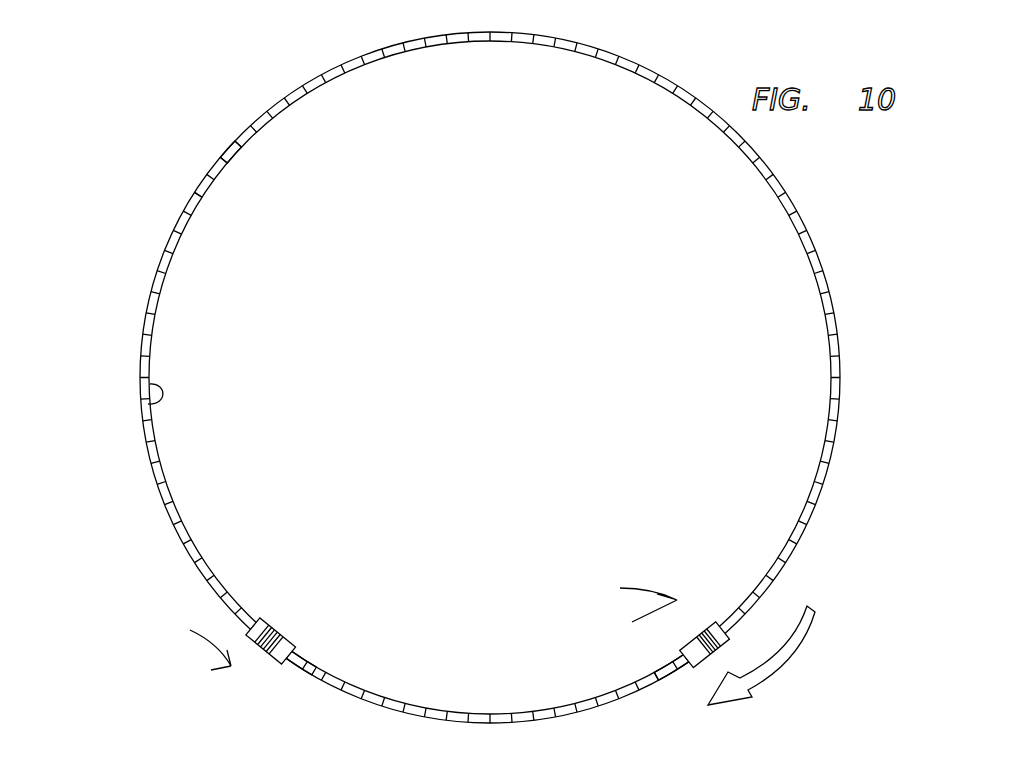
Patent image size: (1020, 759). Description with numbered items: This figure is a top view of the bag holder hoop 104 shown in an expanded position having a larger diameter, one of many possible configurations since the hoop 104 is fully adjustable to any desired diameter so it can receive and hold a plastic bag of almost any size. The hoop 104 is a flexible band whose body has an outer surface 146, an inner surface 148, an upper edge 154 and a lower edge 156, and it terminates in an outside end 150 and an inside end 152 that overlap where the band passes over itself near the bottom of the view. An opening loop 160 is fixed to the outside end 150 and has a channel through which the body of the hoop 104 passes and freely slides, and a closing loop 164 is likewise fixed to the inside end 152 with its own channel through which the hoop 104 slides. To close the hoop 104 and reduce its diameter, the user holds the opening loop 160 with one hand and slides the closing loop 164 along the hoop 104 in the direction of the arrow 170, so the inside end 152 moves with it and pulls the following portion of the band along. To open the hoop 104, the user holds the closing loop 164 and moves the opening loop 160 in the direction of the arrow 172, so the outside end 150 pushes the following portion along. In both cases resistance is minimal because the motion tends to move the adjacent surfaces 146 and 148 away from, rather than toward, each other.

The hoop 104 is at (446, 377).
The outer surface 146 is at (141, 345).
The inner surface 148 is at (151, 398).
The outside end 150 is at (290, 665).
The inside end 152 is at (672, 660).
The upper edge 154 is at (228, 149).
The lower edge 156 is at (206, 195).
The opening loop 160 is at (276, 626).
The closing loop 164 is at (712, 622).
The arrow 170 is at (624, 594).
The arrow 172 is at (206, 658).